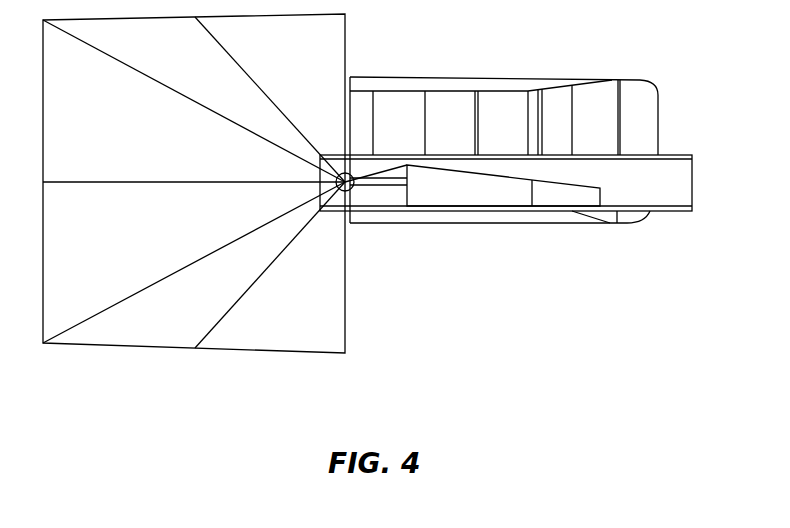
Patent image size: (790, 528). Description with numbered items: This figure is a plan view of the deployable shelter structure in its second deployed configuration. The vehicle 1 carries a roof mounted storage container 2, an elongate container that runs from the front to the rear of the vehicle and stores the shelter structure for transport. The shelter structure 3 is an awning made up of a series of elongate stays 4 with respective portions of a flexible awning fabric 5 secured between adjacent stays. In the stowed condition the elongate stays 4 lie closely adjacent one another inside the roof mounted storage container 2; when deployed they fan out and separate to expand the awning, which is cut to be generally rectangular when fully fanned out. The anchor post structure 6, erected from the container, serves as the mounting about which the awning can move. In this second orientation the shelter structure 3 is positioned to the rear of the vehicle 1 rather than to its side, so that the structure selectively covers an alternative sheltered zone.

The vehicle 1 is at (645, 98).
The roof mounted storage container 2 is at (658, 198).
The shelter structure 3 is at (142, 333).
The elongate stays 4 is at (113, 182).
The flexible awning fabric 5 is at (303, 308).
The anchor post structure 6 is at (352, 175).